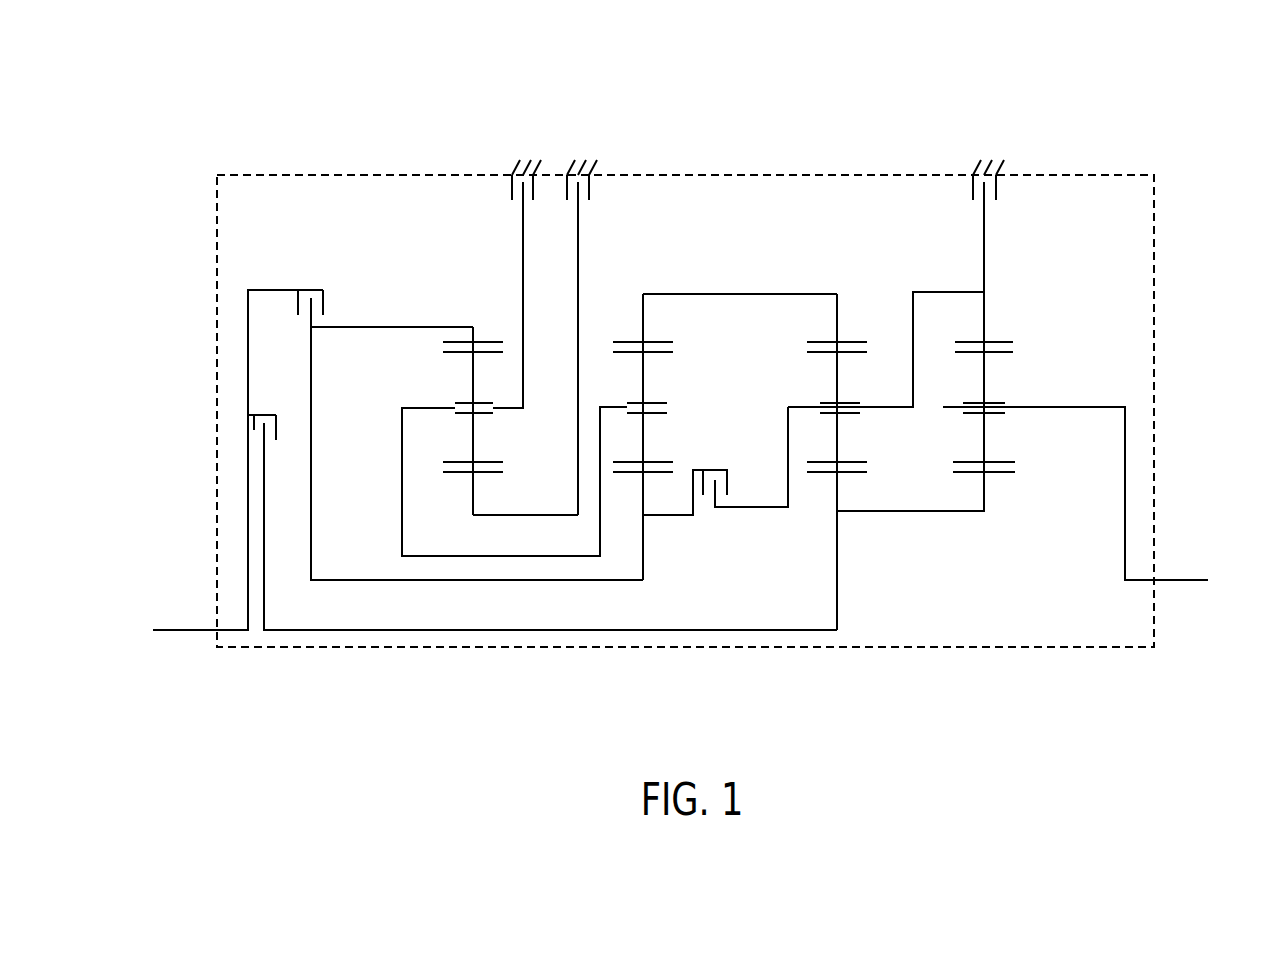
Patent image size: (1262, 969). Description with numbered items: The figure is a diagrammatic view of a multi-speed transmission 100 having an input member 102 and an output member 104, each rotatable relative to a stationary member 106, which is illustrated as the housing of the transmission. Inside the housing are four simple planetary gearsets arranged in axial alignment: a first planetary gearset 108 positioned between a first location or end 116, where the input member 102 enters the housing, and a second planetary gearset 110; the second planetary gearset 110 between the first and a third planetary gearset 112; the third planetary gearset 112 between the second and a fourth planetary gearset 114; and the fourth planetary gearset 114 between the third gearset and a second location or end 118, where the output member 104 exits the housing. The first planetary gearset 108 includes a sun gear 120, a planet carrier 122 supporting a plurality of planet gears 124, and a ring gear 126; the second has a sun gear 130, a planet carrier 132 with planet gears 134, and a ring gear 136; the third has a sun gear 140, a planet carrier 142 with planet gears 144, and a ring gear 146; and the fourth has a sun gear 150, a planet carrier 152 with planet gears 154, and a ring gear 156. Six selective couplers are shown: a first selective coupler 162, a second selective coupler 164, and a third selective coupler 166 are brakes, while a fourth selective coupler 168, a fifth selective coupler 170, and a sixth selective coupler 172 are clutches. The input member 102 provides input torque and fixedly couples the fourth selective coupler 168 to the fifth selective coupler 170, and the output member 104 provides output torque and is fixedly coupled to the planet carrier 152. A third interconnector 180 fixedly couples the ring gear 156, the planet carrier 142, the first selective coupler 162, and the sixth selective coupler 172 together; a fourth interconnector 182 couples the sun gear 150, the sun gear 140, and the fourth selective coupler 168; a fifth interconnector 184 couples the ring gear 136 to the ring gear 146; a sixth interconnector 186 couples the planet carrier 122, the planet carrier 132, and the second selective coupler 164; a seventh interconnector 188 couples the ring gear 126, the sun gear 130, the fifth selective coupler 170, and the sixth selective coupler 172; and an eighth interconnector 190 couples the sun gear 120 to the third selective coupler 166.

The multi-speed transmission 100 is at (1165, 148).
The input member 102 is at (210, 633).
The output member 104 is at (1168, 582).
The stationary member 106 is at (1154, 323).
The first planetary gearset 108 is at (464, 499).
The second planetary gearset 110 is at (643, 499).
The third planetary gearset 112 is at (844, 500).
The fourth planetary gearset 114 is at (1015, 500).
The first location or end 116 is at (190, 607).
The second location or end 118 is at (1173, 553).
The sun gear 120 is at (460, 478).
The planet carrier 122 is at (455, 388).
The planet gears 124 is at (493, 413).
The ring gear 126 is at (487, 337).
The sun gear 130 is at (620, 480).
The planet carrier 132 is at (662, 390).
The planet gears 134 is at (660, 413).
The ring gear 136 is at (625, 337).
The sun gear 140 is at (810, 492).
The planet carrier 142 is at (850, 390).
The planet gears 144 is at (855, 413).
The ring gear 146 is at (851, 337).
The sun gear 150 is at (1005, 490).
The planet carrier 152 is at (1000, 390).
The planet gears 154 is at (1005, 413).
The ring gear 156 is at (1005, 337).
The first selective coupler 162 is at (984, 150).
The second selective coupler 164 is at (516, 150).
The third selective coupler 166 is at (580, 150).
The fourth selective coupler 168 is at (264, 400).
The fifth selective coupler 170 is at (311, 283).
The sixth selective coupler 172 is at (727, 455).
The third interconnector 180 is at (952, 291).
The fourth interconnector 182 is at (918, 513).
The fifth interconnector 184 is at (735, 290).
The sixth interconnector 186 is at (402, 492).
The seventh interconnector 188 is at (645, 556).
The eighth interconnector 190 is at (520, 515).